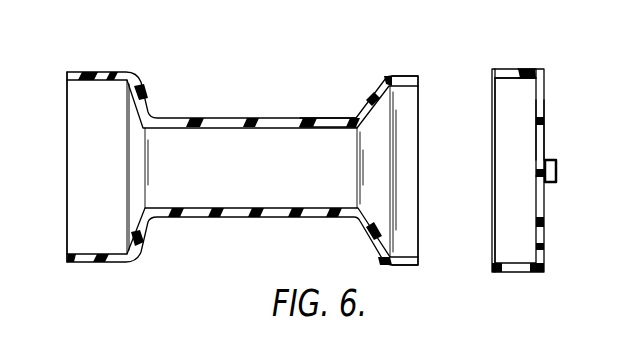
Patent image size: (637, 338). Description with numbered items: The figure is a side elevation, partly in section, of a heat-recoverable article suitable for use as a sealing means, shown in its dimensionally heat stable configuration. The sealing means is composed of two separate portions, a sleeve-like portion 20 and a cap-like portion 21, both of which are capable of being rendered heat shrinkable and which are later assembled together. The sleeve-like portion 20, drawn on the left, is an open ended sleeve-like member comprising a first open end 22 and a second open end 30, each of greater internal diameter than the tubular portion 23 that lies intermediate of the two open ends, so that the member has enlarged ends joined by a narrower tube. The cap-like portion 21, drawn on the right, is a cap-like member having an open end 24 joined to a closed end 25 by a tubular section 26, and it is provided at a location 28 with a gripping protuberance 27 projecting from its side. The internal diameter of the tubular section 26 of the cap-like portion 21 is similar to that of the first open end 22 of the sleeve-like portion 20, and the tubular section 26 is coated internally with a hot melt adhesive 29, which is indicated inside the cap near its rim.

The sleeve-like portion 20 is at (214, 106).
The cap-like portion 21 is at (508, 60).
The first open end 22 is at (67, 170).
The tubular portion 23 is at (321, 118).
The open end 24 is at (512, 215).
The closed end 25 is at (542, 138).
The tubular section 26 is at (518, 72).
The gripping protuberance 27 is at (556, 166).
The protuberance location 28 is at (545, 184).
The hot melt adhesive 29 is at (512, 78).
The second open end 30 is at (402, 76).